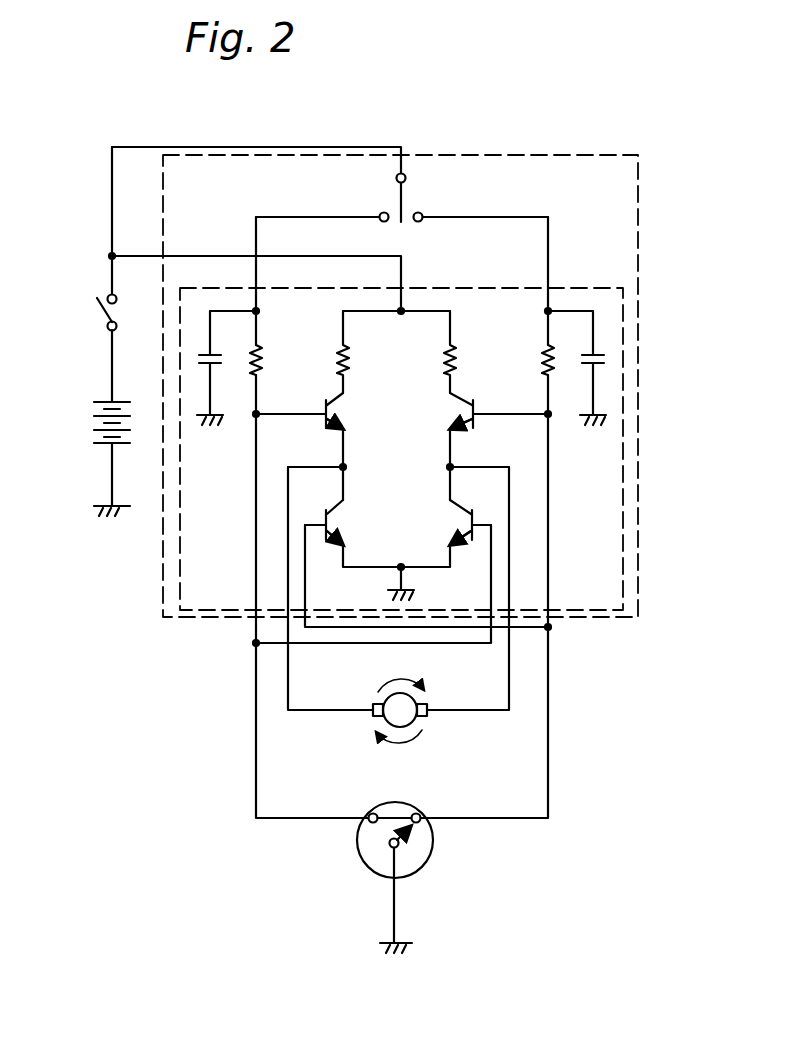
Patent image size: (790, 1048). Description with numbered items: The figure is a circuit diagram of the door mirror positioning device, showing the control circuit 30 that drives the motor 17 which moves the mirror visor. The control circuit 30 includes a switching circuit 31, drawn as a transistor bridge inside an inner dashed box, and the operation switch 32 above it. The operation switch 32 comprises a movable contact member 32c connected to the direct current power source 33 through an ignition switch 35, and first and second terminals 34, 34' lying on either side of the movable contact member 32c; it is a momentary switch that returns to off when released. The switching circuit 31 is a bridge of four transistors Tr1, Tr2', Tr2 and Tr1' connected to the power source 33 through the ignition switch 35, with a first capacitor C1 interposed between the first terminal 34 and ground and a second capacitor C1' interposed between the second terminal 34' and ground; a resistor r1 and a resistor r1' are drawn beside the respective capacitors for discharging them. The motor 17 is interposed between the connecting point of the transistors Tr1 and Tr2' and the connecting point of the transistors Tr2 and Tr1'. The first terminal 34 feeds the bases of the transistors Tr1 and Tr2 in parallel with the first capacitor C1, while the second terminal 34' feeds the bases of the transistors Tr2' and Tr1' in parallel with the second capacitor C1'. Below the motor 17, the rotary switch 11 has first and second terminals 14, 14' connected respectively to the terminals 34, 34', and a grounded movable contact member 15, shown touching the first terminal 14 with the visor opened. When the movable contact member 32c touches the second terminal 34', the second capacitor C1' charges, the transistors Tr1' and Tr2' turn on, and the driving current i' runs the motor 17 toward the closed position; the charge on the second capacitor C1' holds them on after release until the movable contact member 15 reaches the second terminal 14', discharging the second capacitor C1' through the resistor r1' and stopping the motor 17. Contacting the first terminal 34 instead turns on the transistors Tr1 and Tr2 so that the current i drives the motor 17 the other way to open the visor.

The rotary switch 11 is at (378, 880).
The first terminal 14 is at (442, 798).
The second terminal 14' is at (353, 798).
The movable contact member 15 is at (403, 835).
The motor 17 is at (405, 718).
The control circuit 30 is at (640, 190).
The switching circuit 31 is at (610, 532).
The operation switch 32 is at (415, 208).
The movable contact member 32c is at (405, 183).
The direct current power source 33 is at (93, 416).
The first terminal 34 is at (481, 196).
The second terminal 34' is at (322, 196).
The ignition switch 35 is at (105, 318).
The first transistor Tr1 is at (478, 430).
The fourth transistor Tr1' is at (325, 430).
The third transistor Tr2 is at (353, 533).
The second transistor Tr2' is at (446, 533).
The resistor r1 is at (533, 361).
The resistor r1' is at (276, 361).
The first capacitor C1 is at (604, 368).
The second capacitor C1' is at (225, 368).
The current i is at (399, 752).
The driving current i' is at (401, 670).